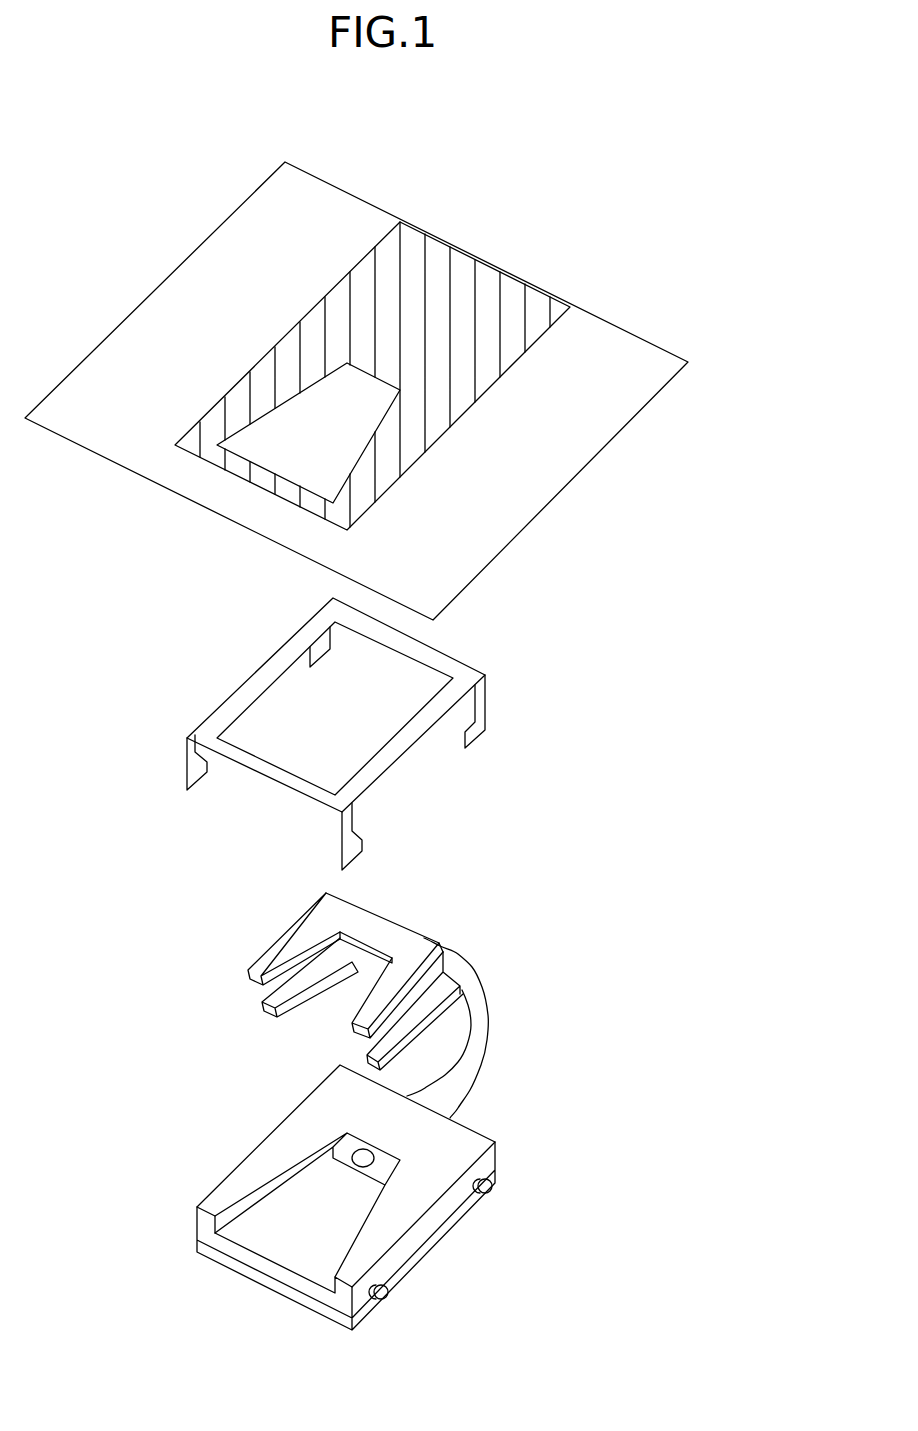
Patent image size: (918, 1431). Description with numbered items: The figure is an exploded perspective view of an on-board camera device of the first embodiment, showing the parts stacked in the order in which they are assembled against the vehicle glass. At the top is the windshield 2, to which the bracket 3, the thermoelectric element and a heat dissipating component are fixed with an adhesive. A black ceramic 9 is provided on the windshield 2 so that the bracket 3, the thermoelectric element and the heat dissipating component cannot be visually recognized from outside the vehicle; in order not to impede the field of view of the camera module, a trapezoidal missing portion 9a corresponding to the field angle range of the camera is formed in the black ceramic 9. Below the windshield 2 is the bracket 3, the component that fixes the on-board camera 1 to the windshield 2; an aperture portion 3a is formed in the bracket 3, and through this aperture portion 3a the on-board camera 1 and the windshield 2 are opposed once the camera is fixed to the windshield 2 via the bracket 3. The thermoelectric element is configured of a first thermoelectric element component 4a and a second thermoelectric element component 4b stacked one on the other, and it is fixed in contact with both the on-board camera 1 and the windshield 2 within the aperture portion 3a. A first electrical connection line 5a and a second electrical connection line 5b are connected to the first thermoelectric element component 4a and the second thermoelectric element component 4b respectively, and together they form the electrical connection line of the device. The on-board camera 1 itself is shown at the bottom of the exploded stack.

The on-board camera 1 is at (492, 1140).
The windshield 2 is at (603, 318).
The bracket 3 is at (485, 698).
The aperture portion 3a is at (335, 725).
The first thermoelectric element component 4a is at (378, 920).
The second thermoelectric element component 4b is at (445, 973).
The first electrical connection line 5a is at (487, 1018).
The second electrical connection line 5b is at (468, 1049).
The black ceramic 9 is at (467, 252).
The trapezoidal missing portion 9a is at (275, 448).